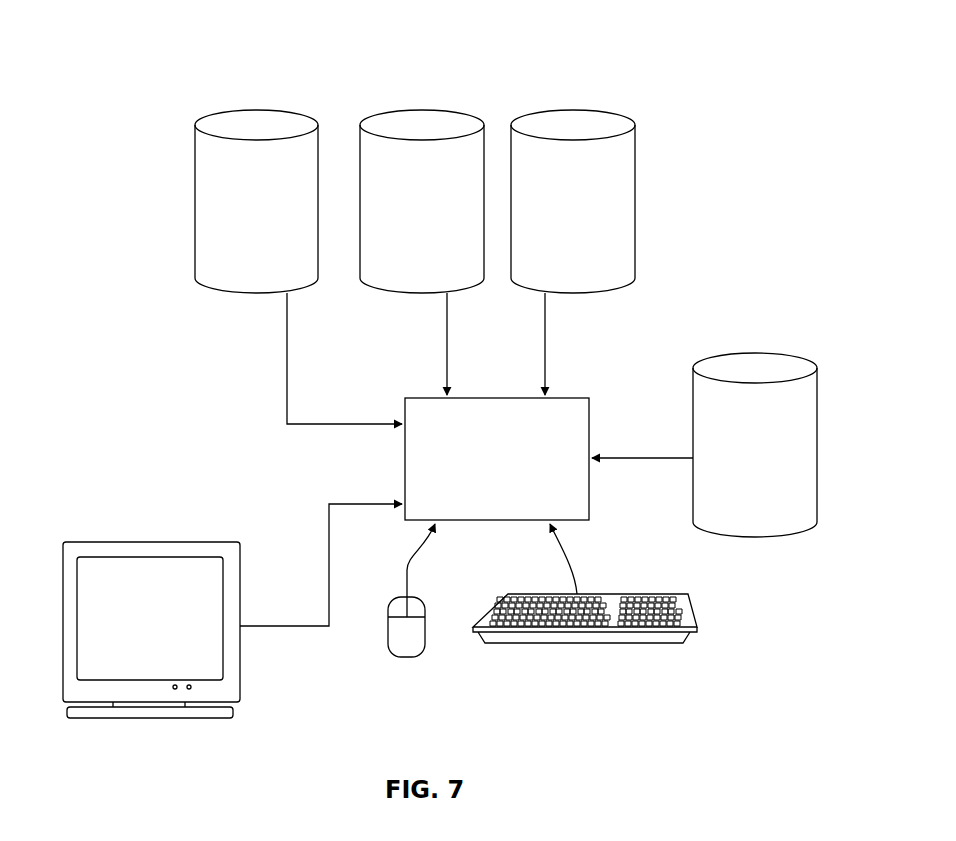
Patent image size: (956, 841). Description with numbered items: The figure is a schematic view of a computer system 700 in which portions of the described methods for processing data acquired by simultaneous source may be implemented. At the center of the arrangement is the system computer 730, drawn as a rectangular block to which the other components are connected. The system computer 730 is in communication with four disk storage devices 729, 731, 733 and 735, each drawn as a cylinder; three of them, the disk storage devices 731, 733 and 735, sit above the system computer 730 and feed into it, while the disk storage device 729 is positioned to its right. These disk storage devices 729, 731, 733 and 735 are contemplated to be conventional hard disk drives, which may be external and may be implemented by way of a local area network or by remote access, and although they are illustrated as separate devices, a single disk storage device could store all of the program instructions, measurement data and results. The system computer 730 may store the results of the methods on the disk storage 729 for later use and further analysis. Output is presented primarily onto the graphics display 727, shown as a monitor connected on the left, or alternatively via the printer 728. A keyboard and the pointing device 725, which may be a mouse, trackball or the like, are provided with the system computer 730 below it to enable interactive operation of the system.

The computer system 700 is at (533, 31).
The pointing device 725 is at (420, 592).
The graphics display 727 is at (210, 542).
The printer 728 is at (662, 592).
The disk storage device 729 is at (757, 352).
The system computer 730 is at (572, 397).
The disk storage device 731 is at (572, 108).
The disk storage device 733 is at (418, 107).
The disk storage device 735 is at (257, 107).